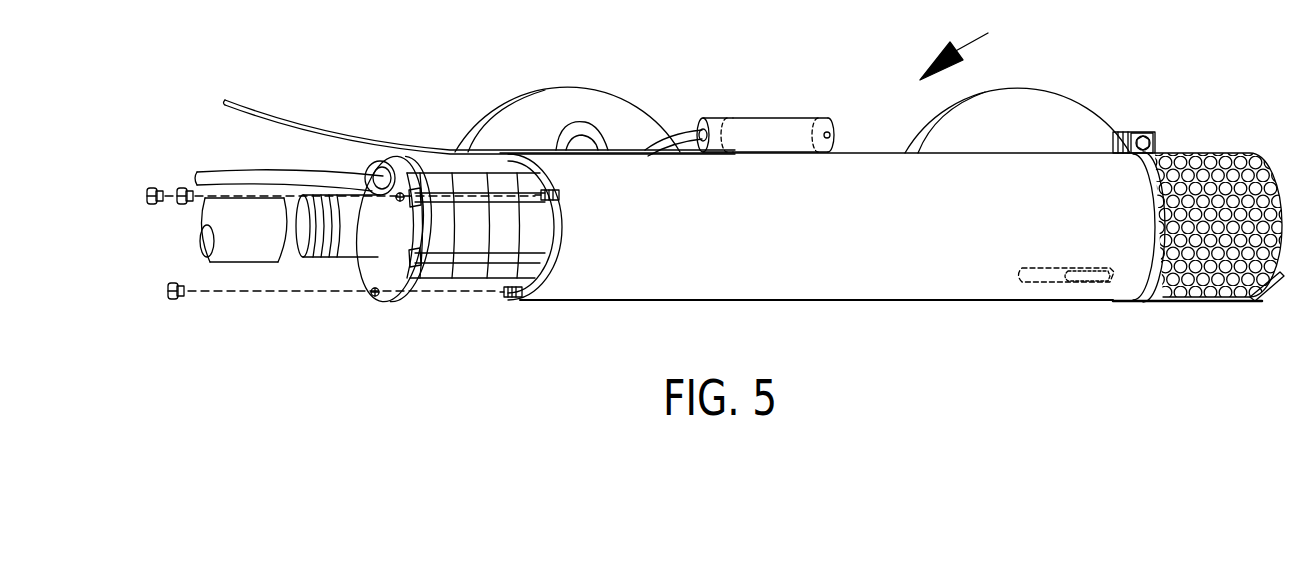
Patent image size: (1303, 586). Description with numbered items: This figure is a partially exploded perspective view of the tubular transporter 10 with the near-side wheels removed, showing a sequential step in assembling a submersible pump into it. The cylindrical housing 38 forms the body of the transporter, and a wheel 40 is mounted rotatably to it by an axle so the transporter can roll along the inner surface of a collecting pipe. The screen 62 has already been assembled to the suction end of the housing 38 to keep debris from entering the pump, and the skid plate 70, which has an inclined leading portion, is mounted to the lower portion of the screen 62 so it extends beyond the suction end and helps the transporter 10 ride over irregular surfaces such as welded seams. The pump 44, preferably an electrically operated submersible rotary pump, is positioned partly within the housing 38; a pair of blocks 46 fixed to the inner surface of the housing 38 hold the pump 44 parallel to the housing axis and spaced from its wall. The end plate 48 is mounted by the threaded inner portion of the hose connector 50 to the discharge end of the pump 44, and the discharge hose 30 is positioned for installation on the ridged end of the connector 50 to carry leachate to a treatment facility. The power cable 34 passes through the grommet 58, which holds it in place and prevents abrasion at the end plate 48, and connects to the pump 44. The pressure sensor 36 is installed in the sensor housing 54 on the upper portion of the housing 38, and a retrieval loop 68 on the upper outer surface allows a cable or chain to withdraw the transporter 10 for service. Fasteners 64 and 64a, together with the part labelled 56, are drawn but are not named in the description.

The tubular transporter 10 is at (974, 46).
The discharge hose 30 is at (252, 247).
The power cable 34 is at (250, 109).
The pressure sensor 36 is at (710, 121).
The cylindrical housing 38 is at (864, 158).
The wheel 40 is at (1082, 113).
The pump 44 is at (450, 275).
The block 46 is at (1098, 284).
The end plate 48 is at (393, 285).
The hose connector 50 is at (307, 227).
The sensor housing 54 is at (785, 118).
The cable 56 is at (378, 163).
The grommet 58 is at (405, 172).
The screen 62 is at (1228, 152).
The bolt 64 is at (500, 295).
The nut 64a is at (180, 300).
The retrieval loop 68 is at (593, 137).
The skid plate 70 is at (1280, 280).